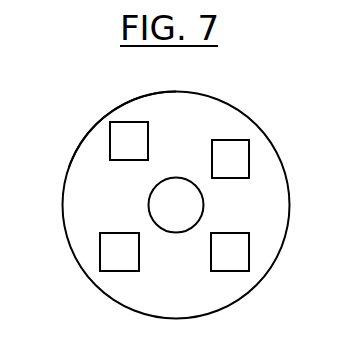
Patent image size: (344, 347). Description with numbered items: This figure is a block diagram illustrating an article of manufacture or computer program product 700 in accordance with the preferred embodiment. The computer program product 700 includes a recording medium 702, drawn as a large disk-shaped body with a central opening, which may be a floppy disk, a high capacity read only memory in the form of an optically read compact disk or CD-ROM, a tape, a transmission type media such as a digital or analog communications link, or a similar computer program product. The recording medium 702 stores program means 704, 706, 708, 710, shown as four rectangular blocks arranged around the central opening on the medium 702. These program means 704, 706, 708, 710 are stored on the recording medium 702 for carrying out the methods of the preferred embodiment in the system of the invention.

The computer program product 700 is at (241, 94).
The recording medium 702 is at (69, 167).
The program means 704 is at (230, 159).
The program means 706 is at (119, 252).
The program means 708 is at (129, 141).
The program means 710 is at (230, 252).